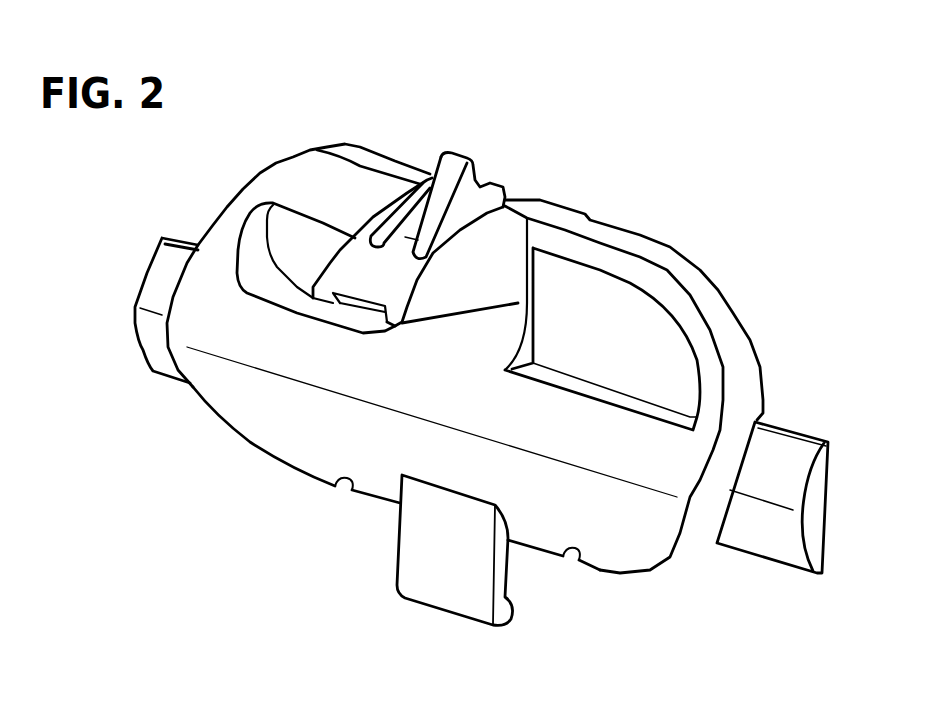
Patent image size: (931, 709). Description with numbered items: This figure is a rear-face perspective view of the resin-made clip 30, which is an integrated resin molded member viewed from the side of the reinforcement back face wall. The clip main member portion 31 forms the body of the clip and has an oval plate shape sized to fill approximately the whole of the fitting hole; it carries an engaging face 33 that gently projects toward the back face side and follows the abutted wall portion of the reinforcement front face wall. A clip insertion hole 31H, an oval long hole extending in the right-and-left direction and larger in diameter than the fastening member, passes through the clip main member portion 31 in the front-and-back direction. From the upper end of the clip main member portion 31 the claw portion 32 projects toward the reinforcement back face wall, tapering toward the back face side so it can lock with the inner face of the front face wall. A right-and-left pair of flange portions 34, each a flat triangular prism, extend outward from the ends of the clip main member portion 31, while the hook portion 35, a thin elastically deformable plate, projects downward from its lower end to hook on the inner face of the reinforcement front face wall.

The resin-made clip 30 is at (727, 219).
The clip main member portion 31 is at (674, 568).
The clip insertion hole 31H is at (311, 211).
The claw portion 32 is at (458, 150).
The engaging face 33 is at (200, 358).
The flange portion 34 is at (194, 238).
The hook portion 35 is at (437, 612).